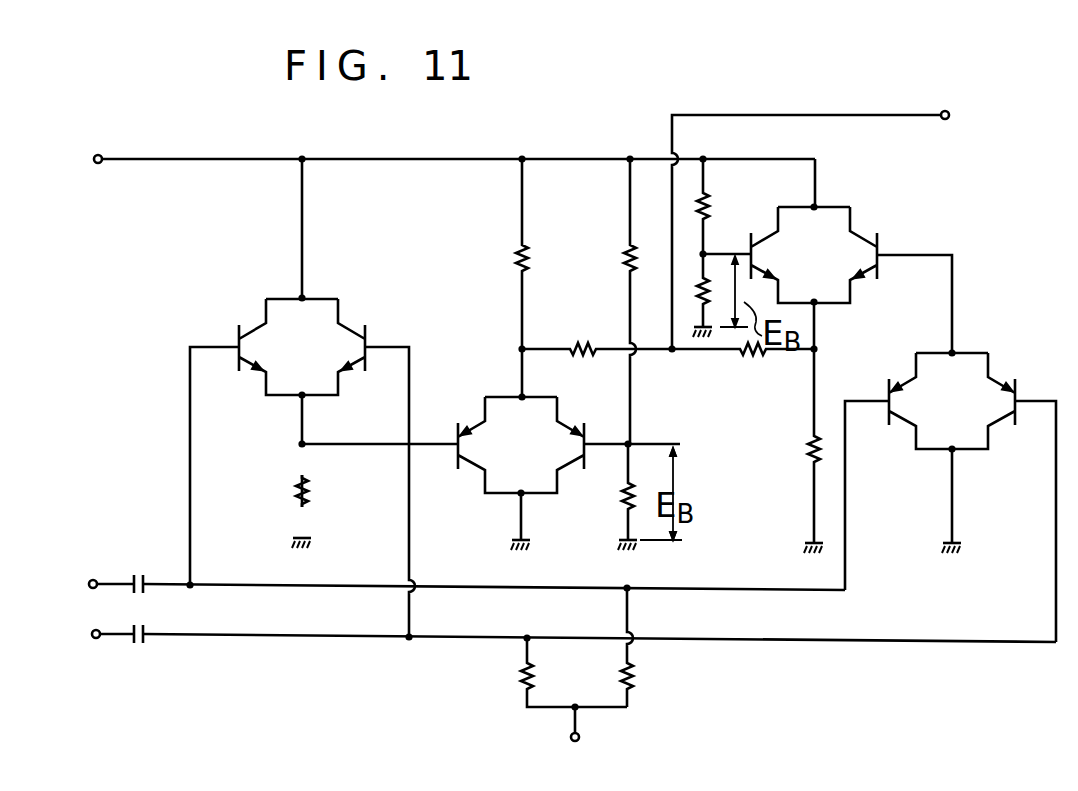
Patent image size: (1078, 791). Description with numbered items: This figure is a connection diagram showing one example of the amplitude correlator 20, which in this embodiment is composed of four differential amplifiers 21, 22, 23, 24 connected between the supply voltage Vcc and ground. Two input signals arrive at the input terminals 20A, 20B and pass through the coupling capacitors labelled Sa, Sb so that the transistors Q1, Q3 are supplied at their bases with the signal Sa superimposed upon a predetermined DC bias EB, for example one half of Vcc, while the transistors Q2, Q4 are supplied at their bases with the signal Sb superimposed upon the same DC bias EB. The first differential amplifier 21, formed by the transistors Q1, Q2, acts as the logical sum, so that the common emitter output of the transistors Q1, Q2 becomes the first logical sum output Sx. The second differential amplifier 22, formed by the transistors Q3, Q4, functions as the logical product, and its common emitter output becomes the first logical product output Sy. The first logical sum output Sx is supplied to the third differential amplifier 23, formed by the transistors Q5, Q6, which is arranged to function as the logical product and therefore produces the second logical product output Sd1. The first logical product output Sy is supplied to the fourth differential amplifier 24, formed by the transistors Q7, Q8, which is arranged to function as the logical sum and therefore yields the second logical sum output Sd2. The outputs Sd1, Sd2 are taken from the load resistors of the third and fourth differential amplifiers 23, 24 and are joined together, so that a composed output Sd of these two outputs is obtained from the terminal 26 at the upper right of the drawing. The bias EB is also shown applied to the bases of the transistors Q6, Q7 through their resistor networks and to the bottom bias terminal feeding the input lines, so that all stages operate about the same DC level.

The amplitude correlator 20 is at (599, 148).
The first differential amplifier 21 is at (324, 367).
The second differential amplifier 22 is at (972, 422).
The third differential amplifier 23 is at (542, 467).
The fourth differential amplifier 24 is at (835, 276).
The terminal 26 is at (947, 120).
The first input terminal 20A is at (89, 588).
The second input terminal 20B is at (92, 638).
The transistor Q1 is at (230, 338).
The transistor Q2 is at (375, 338).
The transistor Q3 is at (888, 424).
The transistor Q4 is at (1012, 424).
The transistor Q5 is at (448, 458).
The transistor Q6 is at (582, 458).
The transistor Q7 is at (741, 238).
The transistor Q8 is at (880, 272).
The signal Sa is at (113, 581).
The signal Sb is at (116, 637).
The first logical sum output Sx is at (358, 448).
The first logical product output Sy is at (916, 256).
The output signal Sd is at (875, 120).
The second logical product output Sd1 is at (560, 348).
The second logical sum output Sd2 is at (748, 352).
The DC bias EB is at (577, 683).
The supply voltage Vcc is at (98, 140).